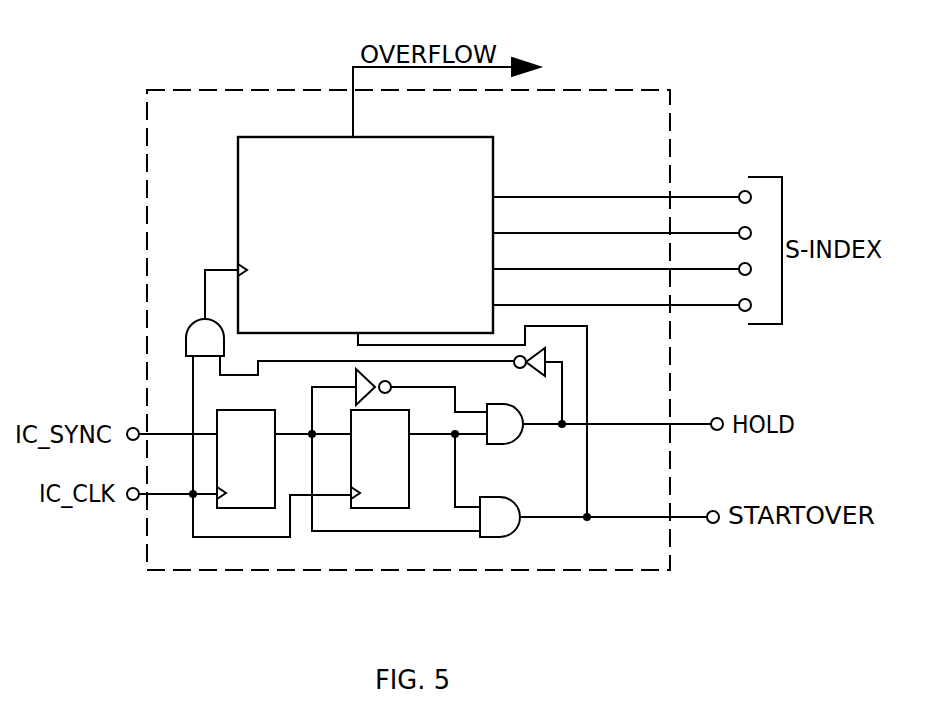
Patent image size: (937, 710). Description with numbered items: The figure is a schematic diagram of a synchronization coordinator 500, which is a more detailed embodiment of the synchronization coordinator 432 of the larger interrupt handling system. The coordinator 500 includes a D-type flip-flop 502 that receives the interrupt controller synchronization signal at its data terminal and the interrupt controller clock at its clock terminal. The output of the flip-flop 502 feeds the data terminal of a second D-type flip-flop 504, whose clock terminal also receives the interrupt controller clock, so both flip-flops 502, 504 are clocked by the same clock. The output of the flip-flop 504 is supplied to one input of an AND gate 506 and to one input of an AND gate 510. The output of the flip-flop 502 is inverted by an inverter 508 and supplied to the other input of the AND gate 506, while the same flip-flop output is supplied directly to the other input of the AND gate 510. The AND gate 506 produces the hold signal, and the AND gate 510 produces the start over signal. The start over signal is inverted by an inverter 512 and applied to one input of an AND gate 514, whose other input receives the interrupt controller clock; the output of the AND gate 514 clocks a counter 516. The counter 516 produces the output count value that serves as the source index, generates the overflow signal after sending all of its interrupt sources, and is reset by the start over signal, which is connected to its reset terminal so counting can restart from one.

The synchronization coordinator 500 is at (396, 290).
The synchronization coordinator 432 is at (163, 90).
The counter 516 is at (493, 151).
The AND gate 514 is at (226, 348).
The D-type flip-flop 502 is at (226, 508).
The D-type flip-flop 504 is at (410, 456).
The inverter 508 is at (372, 377).
The inverter 512 is at (537, 377).
The AND gate 506 is at (500, 444).
The AND gate 510 is at (497, 538).